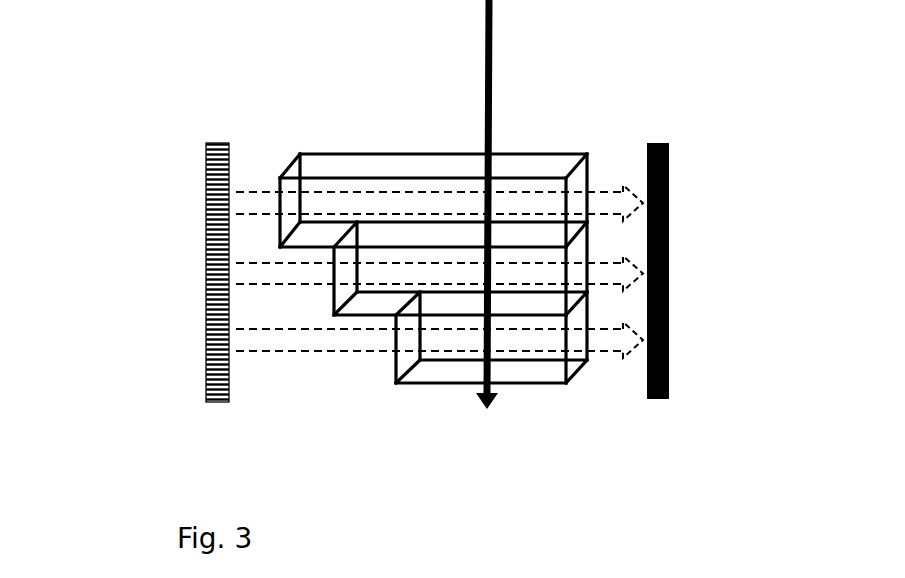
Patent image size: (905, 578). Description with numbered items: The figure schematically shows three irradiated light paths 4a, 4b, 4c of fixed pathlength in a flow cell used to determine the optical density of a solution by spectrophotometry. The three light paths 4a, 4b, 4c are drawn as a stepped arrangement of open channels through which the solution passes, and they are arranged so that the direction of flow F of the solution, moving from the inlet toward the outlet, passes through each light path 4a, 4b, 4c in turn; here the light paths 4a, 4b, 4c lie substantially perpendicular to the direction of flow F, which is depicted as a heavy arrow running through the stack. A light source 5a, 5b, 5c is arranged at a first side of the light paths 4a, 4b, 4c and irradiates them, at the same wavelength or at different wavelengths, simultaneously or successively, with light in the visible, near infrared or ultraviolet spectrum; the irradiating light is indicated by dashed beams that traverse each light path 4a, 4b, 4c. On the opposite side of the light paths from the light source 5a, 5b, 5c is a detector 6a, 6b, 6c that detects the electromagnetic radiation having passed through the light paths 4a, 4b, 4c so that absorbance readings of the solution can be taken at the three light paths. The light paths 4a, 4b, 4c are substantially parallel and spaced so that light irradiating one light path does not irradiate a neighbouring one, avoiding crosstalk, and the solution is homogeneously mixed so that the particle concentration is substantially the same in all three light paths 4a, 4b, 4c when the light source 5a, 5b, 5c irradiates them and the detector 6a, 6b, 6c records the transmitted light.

The light path 4a is at (427, 163).
The light path 4b is at (347, 318).
The light path 4c is at (546, 383).
The light source 5a is at (206, 277).
The light source 5b is at (217, 275).
The light source 5c is at (217, 360).
The detector 6a is at (669, 252).
The detector 6b is at (658, 271).
The detector 6c is at (658, 356).
The direction of flow F is at (505, 204).